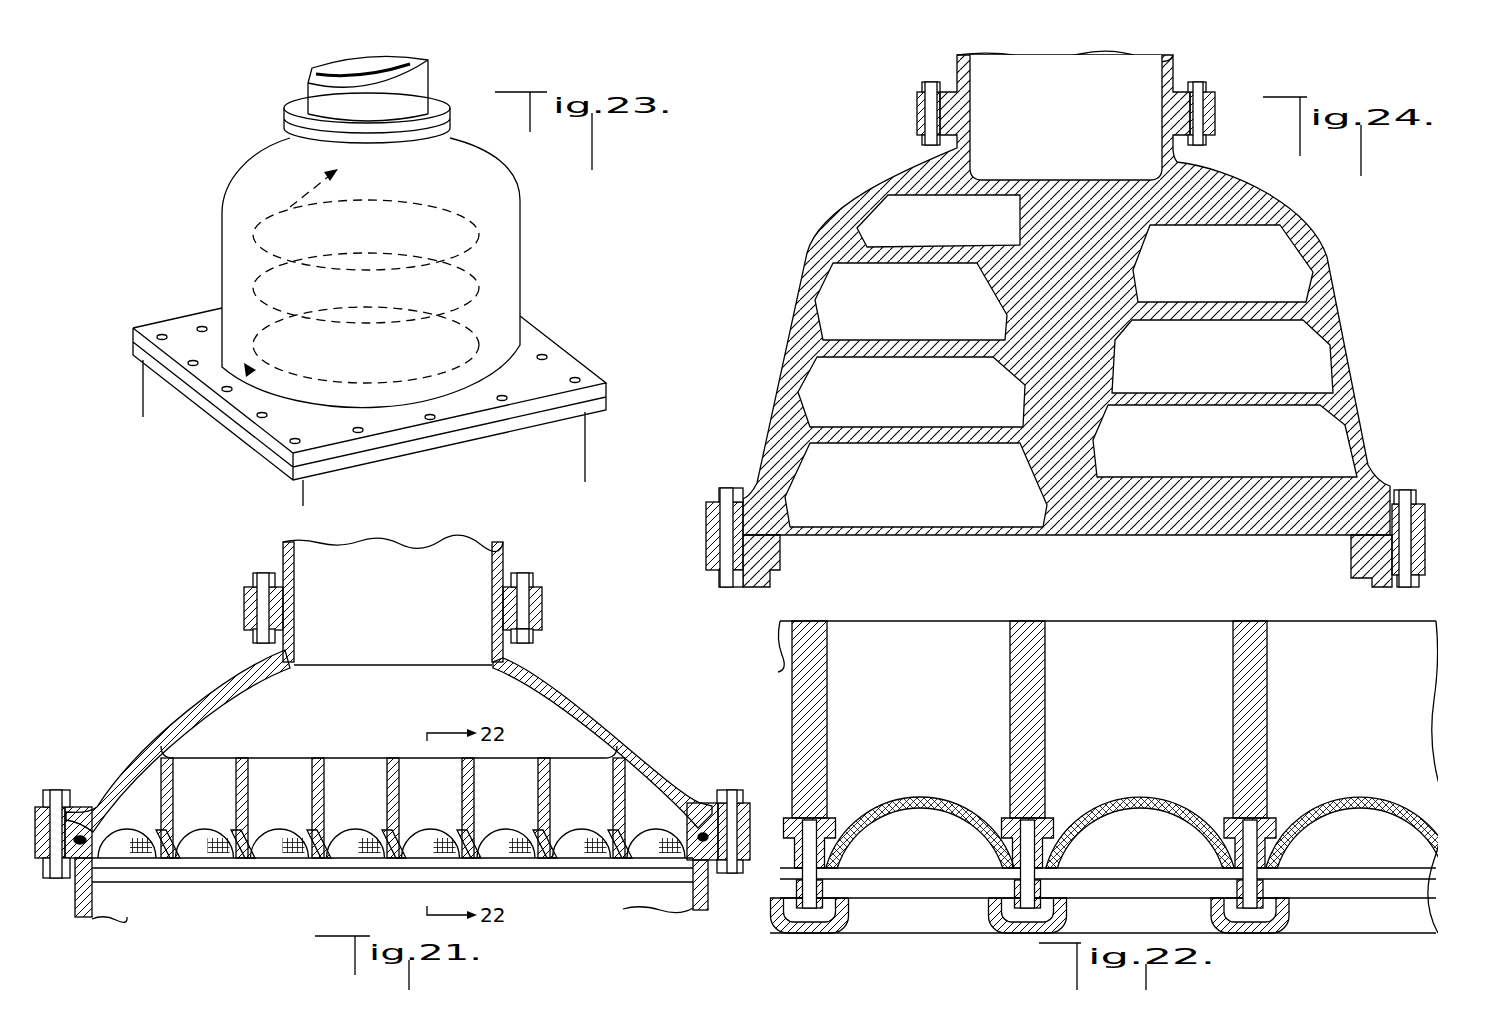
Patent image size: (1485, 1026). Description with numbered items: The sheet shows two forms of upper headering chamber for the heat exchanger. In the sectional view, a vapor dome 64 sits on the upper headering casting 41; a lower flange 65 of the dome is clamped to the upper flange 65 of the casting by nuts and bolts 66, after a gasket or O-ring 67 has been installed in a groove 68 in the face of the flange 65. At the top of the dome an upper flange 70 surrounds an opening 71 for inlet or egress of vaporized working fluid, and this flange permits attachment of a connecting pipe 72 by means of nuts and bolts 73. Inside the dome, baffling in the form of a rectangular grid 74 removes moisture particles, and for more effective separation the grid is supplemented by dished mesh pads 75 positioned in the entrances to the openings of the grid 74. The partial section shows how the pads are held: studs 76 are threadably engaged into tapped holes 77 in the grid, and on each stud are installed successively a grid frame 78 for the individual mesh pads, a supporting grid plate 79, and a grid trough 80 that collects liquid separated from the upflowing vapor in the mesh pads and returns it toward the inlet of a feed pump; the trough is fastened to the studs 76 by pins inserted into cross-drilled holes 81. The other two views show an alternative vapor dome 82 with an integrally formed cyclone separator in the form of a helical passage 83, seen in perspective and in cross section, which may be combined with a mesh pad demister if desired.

In FIG. 21, the upper headering casting 41 is at (700, 908).
In FIG. 21, the vapor dome 64 is at (607, 708).
In FIG. 21, the flange 65 is at (753, 814).
In FIG. 21, the nuts and bolts 66 is at (758, 856).
In FIG. 23, the gasket or O-ring 67 is at (547, 354).
In FIG. 24, the gasket or O-ring 67 is at (728, 512).
In FIG. 21, the gasket or O-ring 67 is at (730, 810).
In FIG. 21, the groove 68 is at (687, 817).
In FIG. 21, the upper flange 70 is at (546, 621).
In FIG. 21, the opening 71 is at (381, 646).
In FIG. 23, the connecting pipe 72 is at (315, 90).
In FIG. 24, the connecting pipe 72 is at (1177, 66).
In FIG. 21, the connecting pipe 72 is at (505, 553).
In FIG. 24, the nuts and bolts 73 is at (917, 101).
In FIG. 21, the nuts and bolts 73 is at (527, 596).
In FIG. 21, the rectangular grid 74 is at (340, 746).
In FIG. 22, the rectangular grid 74 is at (1160, 610).
In FIG. 21, the dished mesh pads 75 is at (354, 829).
In FIG. 22, the dished mesh pads 75 is at (914, 793).
In FIG. 22, the studs 76 is at (1290, 845).
In FIG. 22, the tapped holes 77 is at (1249, 818).
In FIG. 21, the grid frame 78 is at (403, 836).
In FIG. 22, the grid frame 78 is at (1048, 851).
In FIG. 22, the supporting grid plate 79 is at (1052, 880).
In FIG. 21, the grid trough 80 is at (280, 873).
In FIG. 22, the grid trough 80 is at (1262, 932).
In FIG. 22, the cross-drilled holes 81 is at (1270, 886).
In FIG. 23, the vapor dome 82 is at (527, 213).
In FIG. 24, the vapor dome 82 is at (1356, 281).
In FIG. 23, the helical passage 83 is at (485, 290).
In FIG. 24, the helical passage 83 is at (833, 322).